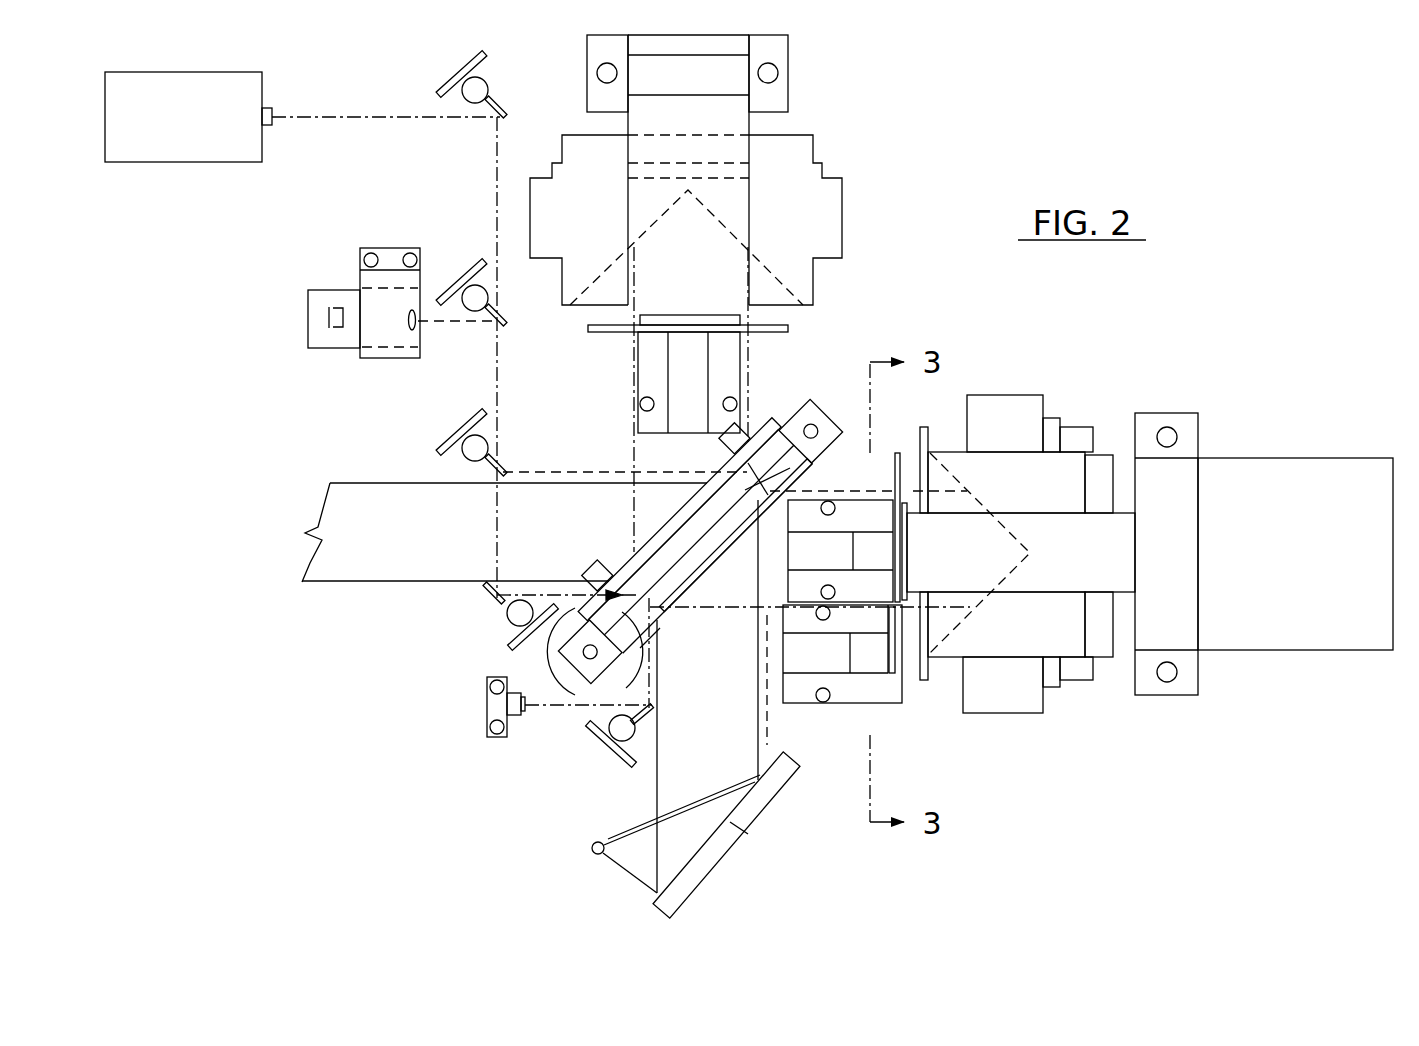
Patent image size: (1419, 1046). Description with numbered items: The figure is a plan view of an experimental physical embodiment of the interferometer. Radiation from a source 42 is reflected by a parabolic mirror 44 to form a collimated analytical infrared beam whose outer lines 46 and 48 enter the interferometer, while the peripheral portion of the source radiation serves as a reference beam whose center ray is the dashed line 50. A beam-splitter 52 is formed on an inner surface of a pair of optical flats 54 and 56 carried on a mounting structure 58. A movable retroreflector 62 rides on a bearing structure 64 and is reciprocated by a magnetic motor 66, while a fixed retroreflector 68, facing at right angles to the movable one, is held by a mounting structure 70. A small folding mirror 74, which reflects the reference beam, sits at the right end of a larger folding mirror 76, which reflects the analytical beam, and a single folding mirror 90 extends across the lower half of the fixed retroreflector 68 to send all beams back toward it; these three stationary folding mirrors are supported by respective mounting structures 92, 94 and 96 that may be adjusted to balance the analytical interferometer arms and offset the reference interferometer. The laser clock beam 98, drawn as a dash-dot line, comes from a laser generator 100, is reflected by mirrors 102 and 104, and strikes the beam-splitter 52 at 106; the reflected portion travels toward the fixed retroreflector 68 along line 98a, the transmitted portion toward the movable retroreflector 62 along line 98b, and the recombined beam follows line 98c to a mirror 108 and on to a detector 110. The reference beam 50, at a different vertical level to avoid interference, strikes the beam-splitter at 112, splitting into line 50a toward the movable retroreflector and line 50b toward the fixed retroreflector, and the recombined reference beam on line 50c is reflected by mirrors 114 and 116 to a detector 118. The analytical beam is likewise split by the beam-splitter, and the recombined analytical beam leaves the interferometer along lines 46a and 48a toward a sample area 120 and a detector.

The source 42 is at (594, 850).
The parabolic mirror 44 is at (748, 830).
The outer line of analytical beam 46 is at (655, 797).
The outer line of recombined analytical beam 46a is at (395, 578).
The outer line of analytical beam 48 is at (770, 755).
The outer line of recombined analytical beam 48a is at (398, 490).
The reference beam 50 is at (783, 718).
The reflected reference beam line 50a is at (860, 490).
The transmitted reference beam line 50b is at (750, 408).
The recombined reference beam line 50c is at (590, 472).
The beam-splitter 52 is at (590, 580).
The optical flat 54 is at (640, 545).
The optical flat 56 is at (686, 575).
The mounting structure 58 is at (592, 690).
The movable retroreflector 62 is at (987, 602).
The bearing structure 64 is at (1091, 578).
The magnetic motor 66 is at (1266, 637).
The fixed retroreflector 68 is at (716, 248).
The mounting structure 70 is at (754, 150).
The small folding mirror 74 is at (896, 665).
The larger folding mirror 76 is at (898, 465).
The single folding mirror 90 is at (775, 324).
The mounting structure 92 is at (790, 655).
The mounting structure 94 is at (790, 545).
The mounting structure 96 is at (645, 368).
The laser clock beam 98 is at (316, 117).
The reflected laser beam line 98a is at (632, 435).
The transmitted laser beam line 98b is at (733, 609).
The recombined laser beam line 98c is at (655, 683).
The laser generator 100 is at (217, 73).
The mirror 102 is at (497, 138).
The mirror 104 is at (490, 567).
The laser beam strike point 106 is at (650, 645).
The mirror 108 is at (655, 738).
The detector 110 is at (533, 693).
The reference beam strike point 112 is at (765, 487).
The mirror 114 is at (490, 497).
The mirror 116 is at (505, 325).
The detector 118 is at (425, 323).
The sample area 120 is at (325, 600).